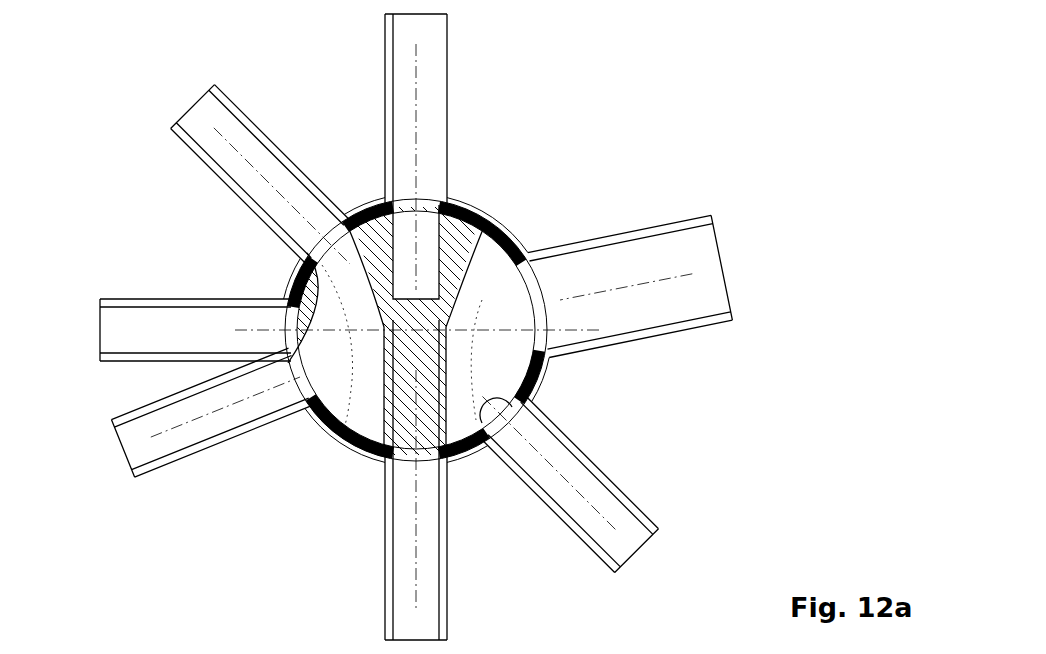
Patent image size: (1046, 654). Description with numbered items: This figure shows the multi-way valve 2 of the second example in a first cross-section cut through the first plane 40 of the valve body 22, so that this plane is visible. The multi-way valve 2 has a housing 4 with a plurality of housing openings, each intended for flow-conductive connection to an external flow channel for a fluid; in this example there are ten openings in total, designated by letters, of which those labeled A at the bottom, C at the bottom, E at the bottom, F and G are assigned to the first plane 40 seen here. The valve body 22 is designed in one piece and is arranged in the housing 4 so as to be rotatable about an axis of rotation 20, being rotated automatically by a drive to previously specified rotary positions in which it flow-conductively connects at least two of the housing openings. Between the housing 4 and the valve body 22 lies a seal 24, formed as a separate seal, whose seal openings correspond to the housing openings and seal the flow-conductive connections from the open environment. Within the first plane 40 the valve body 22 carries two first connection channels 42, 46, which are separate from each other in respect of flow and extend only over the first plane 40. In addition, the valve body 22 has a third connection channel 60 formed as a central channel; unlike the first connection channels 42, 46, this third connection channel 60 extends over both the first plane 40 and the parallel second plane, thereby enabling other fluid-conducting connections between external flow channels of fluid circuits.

The multi-way valve 2 is at (692, 35).
The housing 4 is at (520, 230).
The axis of rotation 20 is at (418, 331).
The valve body 22 is at (447, 288).
The seal 24 is at (530, 390).
The first plane 40 is at (110, 490).
The first connection channel 42 is at (498, 307).
The first connection channel 46 is at (320, 373).
The third connection channel 60 is at (437, 230).